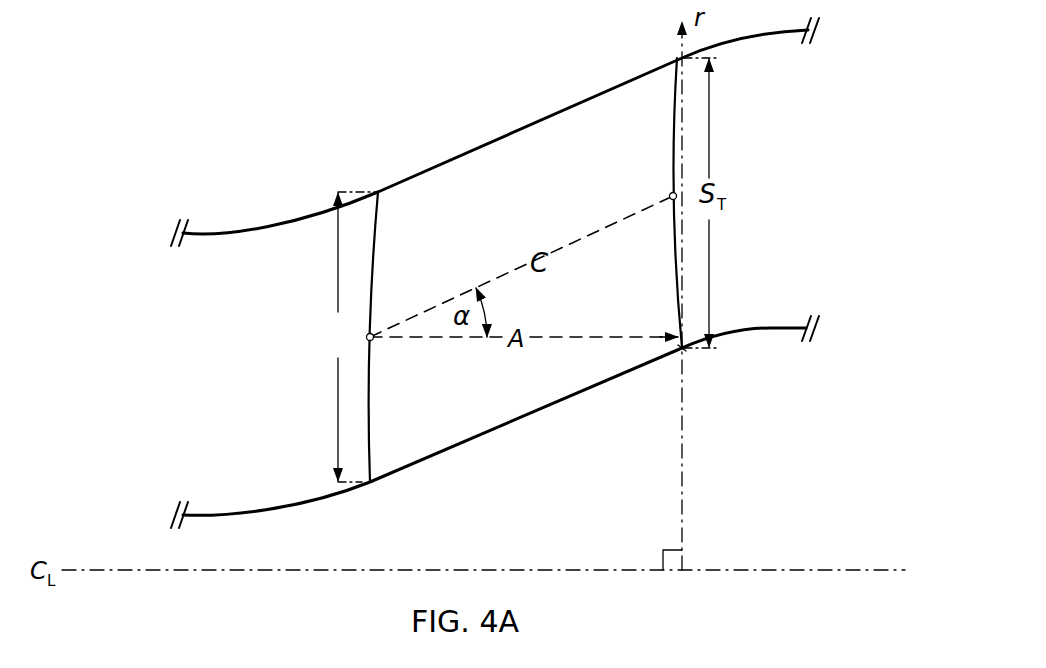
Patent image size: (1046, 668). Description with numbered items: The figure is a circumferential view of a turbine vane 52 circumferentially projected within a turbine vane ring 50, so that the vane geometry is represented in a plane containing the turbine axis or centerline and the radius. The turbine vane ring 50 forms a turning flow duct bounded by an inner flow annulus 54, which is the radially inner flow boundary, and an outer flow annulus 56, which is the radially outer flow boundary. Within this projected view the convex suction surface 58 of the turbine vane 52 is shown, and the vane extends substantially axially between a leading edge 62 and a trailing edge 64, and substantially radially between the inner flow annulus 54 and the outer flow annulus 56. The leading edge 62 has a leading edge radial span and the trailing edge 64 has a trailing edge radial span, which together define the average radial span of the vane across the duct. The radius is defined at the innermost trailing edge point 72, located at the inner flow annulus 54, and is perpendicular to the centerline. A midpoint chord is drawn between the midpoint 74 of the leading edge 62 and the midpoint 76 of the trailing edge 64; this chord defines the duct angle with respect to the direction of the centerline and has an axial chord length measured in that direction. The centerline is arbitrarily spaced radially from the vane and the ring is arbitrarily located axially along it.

The turbine vane ring 50 is at (342, 124).
The turbine vane 52 is at (288, 365).
The inner flow annulus 54 is at (268, 508).
The outer flow annulus 56 is at (270, 229).
The convex (suction) surface 58 is at (527, 160).
The leading edge 62 is at (375, 433).
The trailing edge 64 is at (673, 109).
The innermost trailing edge point 72 is at (687, 353).
The midpoint of leading edge 74 is at (373, 334).
The midpoint of trailing edge 76 is at (670, 193).